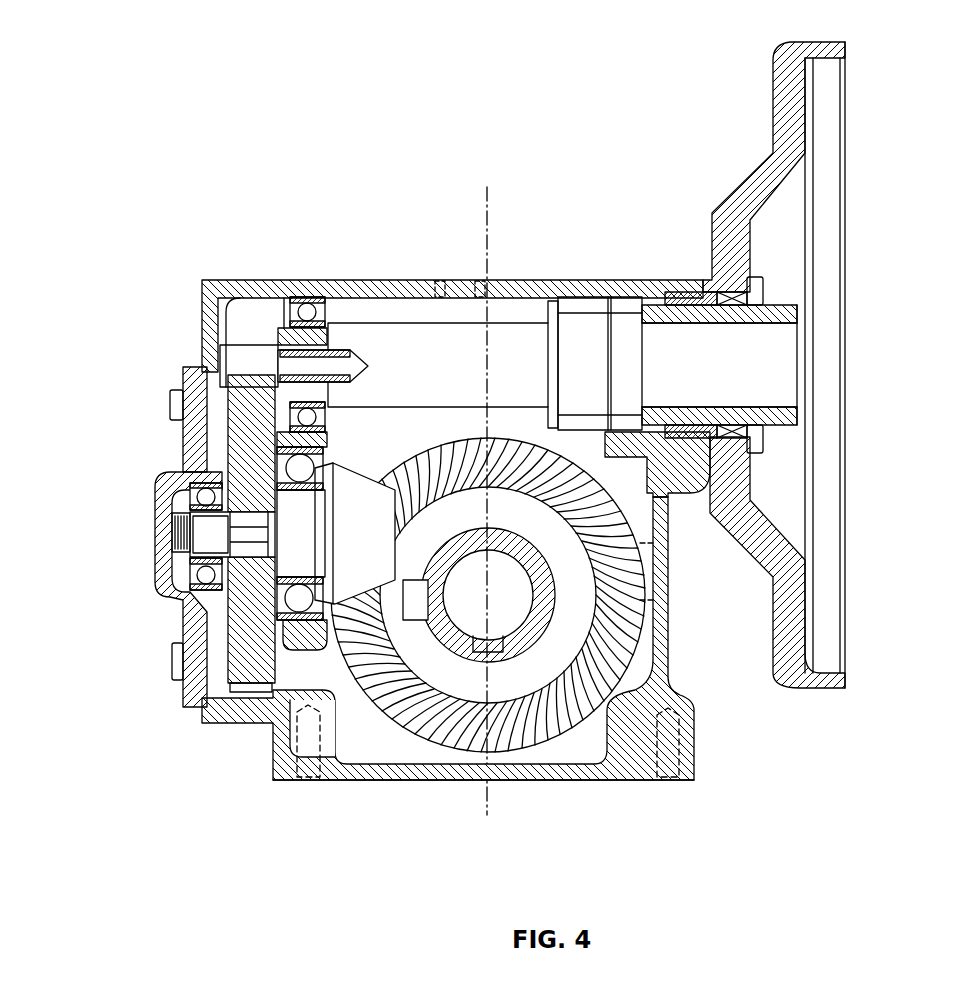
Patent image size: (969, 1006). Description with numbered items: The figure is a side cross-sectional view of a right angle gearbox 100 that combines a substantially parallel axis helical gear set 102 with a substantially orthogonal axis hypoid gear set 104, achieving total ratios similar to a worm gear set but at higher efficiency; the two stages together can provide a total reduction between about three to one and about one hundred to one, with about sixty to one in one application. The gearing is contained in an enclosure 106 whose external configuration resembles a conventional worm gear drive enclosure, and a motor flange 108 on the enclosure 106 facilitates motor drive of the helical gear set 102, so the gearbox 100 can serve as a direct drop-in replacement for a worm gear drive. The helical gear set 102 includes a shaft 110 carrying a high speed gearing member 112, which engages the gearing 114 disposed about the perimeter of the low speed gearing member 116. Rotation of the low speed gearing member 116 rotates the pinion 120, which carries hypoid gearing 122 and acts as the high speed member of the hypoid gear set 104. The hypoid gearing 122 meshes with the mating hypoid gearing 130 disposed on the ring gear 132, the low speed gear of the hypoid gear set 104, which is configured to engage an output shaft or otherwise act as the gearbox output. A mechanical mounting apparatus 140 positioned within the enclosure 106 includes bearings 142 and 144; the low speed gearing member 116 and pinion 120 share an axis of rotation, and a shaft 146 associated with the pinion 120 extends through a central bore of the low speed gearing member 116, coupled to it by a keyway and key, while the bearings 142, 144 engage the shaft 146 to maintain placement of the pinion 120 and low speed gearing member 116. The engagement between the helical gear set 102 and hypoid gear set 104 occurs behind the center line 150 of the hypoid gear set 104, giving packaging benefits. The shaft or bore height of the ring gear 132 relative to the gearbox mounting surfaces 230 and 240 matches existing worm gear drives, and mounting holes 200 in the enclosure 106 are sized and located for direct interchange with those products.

The right angle gearbox 100 is at (618, 58).
The helical gear set 102 is at (222, 395).
The hypoid gear set 104 is at (340, 680).
The enclosure 106 is at (212, 284).
The motor flange 108 is at (836, 43).
The shaft 110 is at (366, 327).
The high speed gearing member 112 is at (240, 346).
The gearing 114 is at (250, 690).
The low speed gearing member 116 is at (182, 607).
The pinion 120 is at (357, 615).
The hypoid gearing 122 is at (372, 470).
The mating hypoid gearing 130 is at (545, 742).
The ring gear 132 is at (640, 518).
The mechanical mounting apparatus 140 is at (250, 535).
The bearing 142 is at (197, 548).
The bearing 144 is at (223, 480).
The shaft 146 is at (197, 520).
The center line 150 is at (490, 193).
The mounting holes 200 is at (668, 781).
The gearbox mounting surface 230 is at (306, 298).
The gearbox mounting surface 240 is at (443, 788).